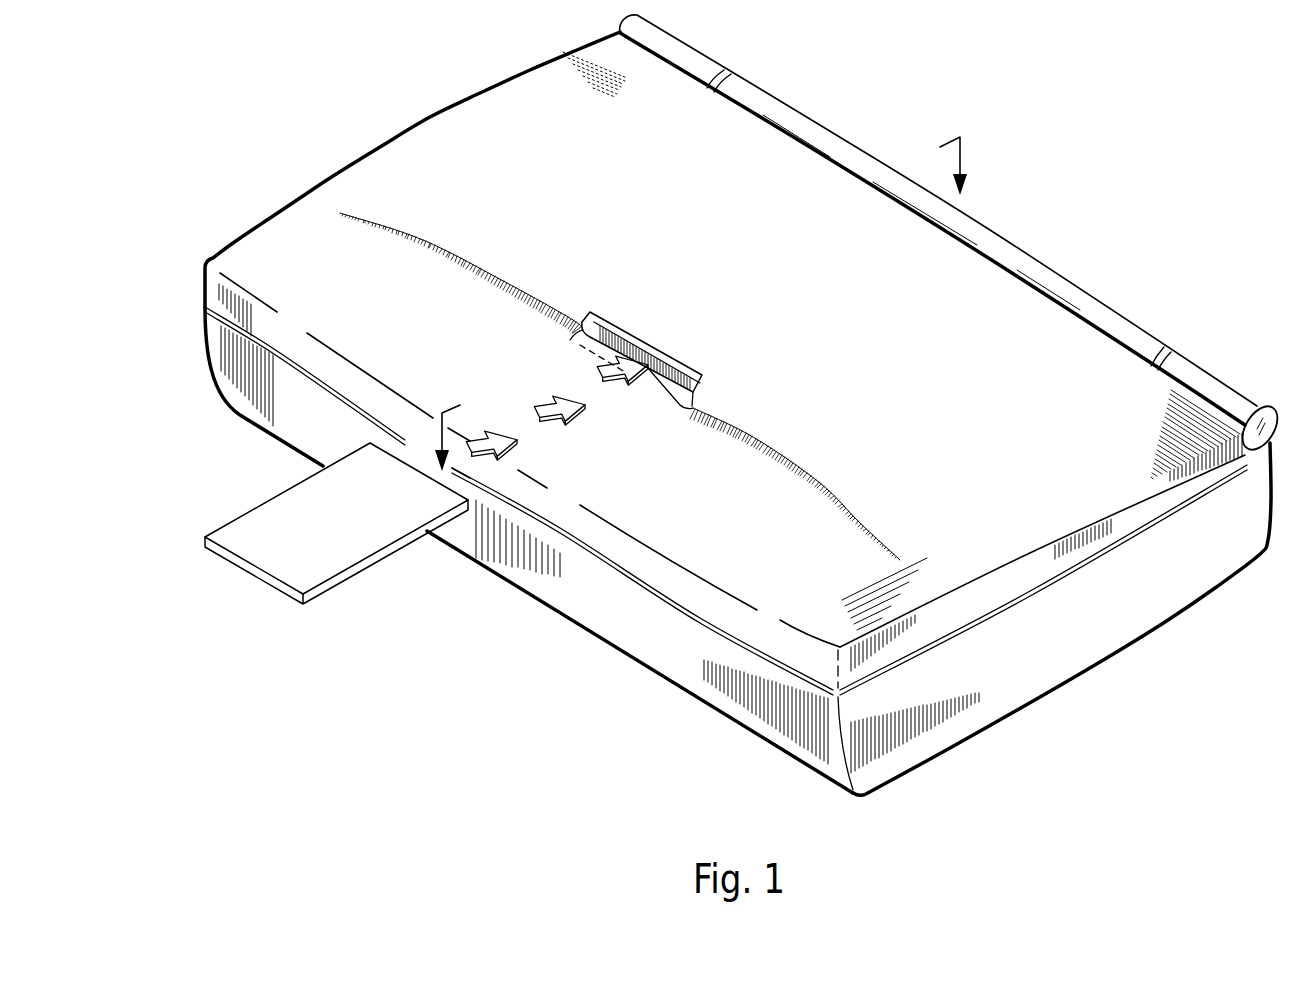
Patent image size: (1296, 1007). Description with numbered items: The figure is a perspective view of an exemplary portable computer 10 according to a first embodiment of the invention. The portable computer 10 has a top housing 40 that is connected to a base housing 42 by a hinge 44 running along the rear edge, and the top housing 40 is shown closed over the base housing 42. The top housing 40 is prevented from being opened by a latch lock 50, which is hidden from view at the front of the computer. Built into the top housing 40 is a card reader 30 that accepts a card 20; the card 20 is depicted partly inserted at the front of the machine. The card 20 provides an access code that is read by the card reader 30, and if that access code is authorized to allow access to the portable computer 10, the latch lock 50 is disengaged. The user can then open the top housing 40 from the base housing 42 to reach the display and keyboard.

The portable computer 10 is at (745, 405).
The card 20 is at (250, 523).
The card reader 30 is at (612, 334).
The top housing 40 is at (1003, 580).
The base housing 42 is at (1025, 682).
The hinge 44 is at (1205, 382).
The latch lock 50 is at (455, 470).